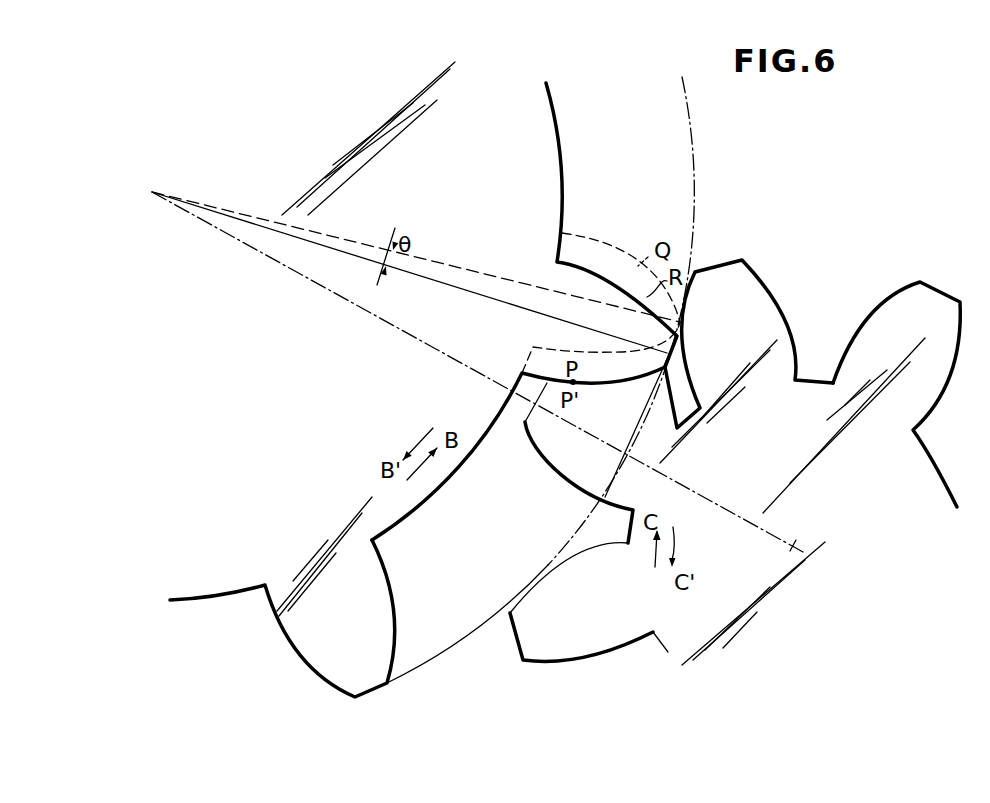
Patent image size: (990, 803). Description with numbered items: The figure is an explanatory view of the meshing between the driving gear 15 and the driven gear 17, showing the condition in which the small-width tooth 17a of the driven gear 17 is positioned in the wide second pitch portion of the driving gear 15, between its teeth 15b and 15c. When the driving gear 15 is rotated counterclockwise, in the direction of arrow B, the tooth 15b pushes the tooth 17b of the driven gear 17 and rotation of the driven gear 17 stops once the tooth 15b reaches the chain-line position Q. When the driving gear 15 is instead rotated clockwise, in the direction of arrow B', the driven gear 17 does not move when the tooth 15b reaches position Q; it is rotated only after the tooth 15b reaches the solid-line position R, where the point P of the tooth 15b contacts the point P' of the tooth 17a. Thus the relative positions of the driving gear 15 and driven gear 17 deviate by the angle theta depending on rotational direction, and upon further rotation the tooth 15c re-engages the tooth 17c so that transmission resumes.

The driving gear 15 is at (538, 196).
The tooth of the driving gear 15b is at (613, 283).
The tooth of the driving gear 15c is at (380, 635).
The driven gear 17 is at (798, 403).
The tooth of the driven gear 17a is at (552, 443).
The tooth of the driven gear 17b is at (743, 283).
The tooth of the driven gear 17c is at (600, 647).